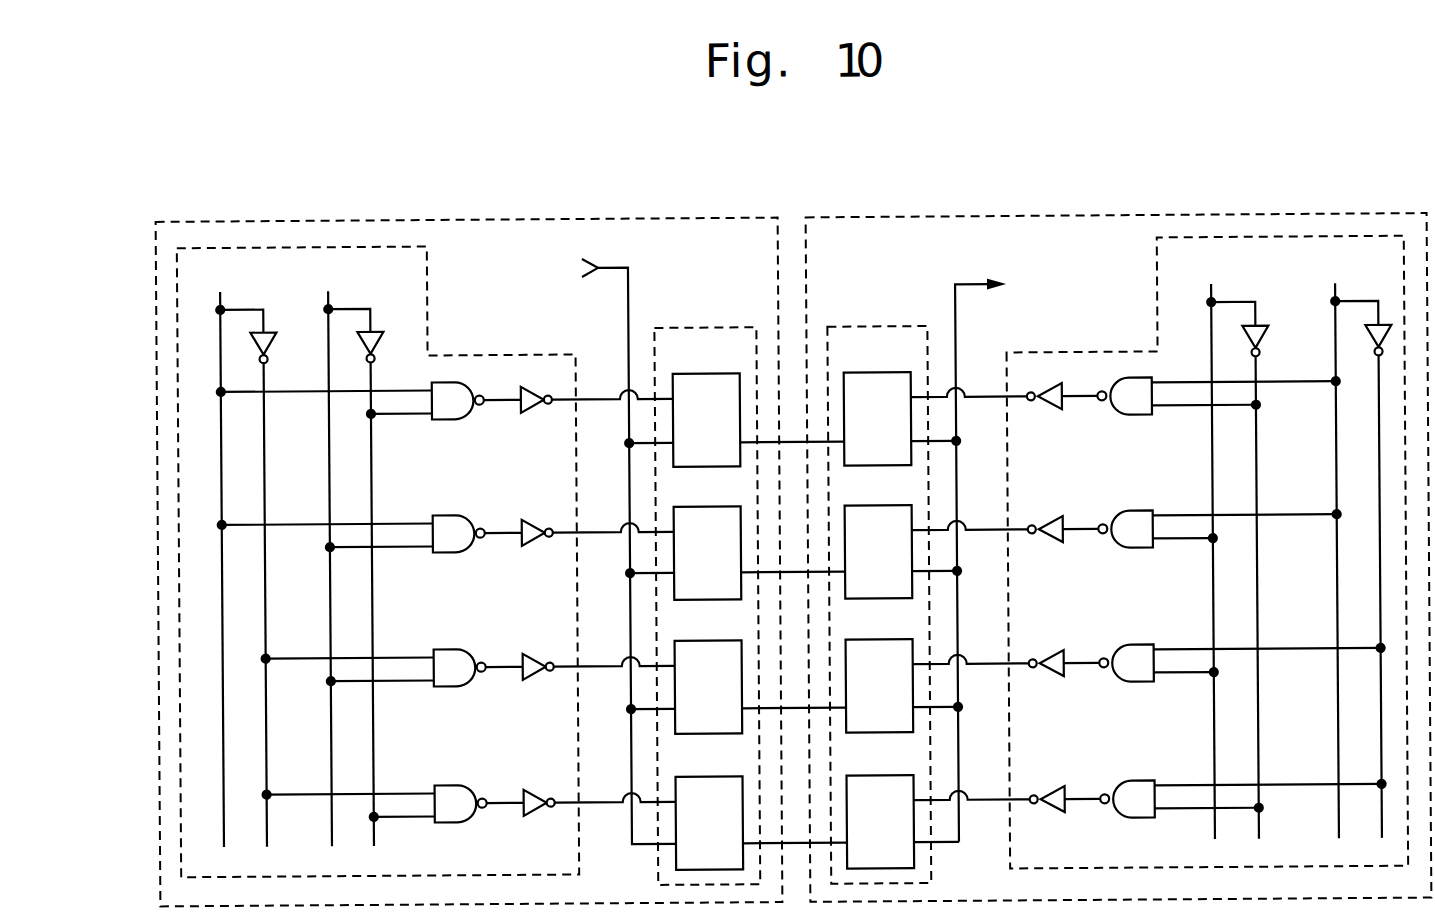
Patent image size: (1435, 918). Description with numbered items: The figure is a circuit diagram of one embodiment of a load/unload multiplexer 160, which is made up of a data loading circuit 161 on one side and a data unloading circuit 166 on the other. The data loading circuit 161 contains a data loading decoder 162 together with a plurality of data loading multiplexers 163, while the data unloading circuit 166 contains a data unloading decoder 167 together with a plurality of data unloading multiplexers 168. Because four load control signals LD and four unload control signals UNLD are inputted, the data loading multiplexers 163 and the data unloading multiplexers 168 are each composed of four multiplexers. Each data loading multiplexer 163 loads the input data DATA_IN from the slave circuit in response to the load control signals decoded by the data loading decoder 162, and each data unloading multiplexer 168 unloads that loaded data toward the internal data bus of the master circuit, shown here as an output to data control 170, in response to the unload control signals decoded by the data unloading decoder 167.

The load/unload multiplexer 160 is at (997, 136).
The data loading circuit 161 is at (569, 218).
The data loading decoder 162 is at (299, 244).
The data loading multiplexers 163 is at (708, 326).
The data unloading circuit 166 is at (1078, 218).
The data unloading decoder 167 is at (1278, 240).
The data unloading multiplexers 168 is at (879, 328).
The data control 170 is at (1051, 556).